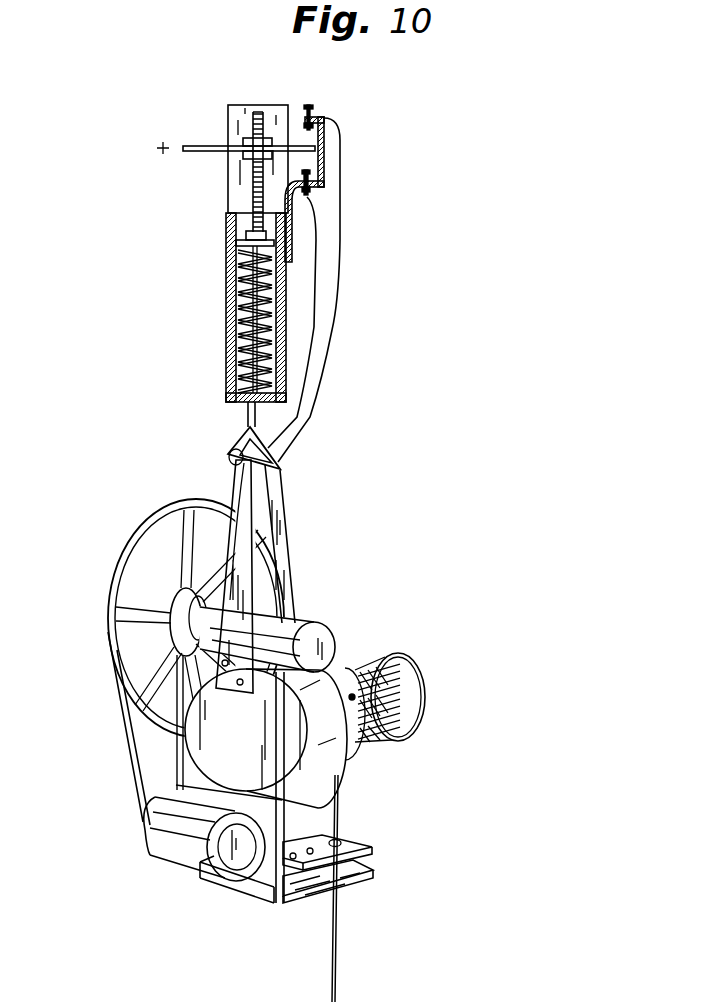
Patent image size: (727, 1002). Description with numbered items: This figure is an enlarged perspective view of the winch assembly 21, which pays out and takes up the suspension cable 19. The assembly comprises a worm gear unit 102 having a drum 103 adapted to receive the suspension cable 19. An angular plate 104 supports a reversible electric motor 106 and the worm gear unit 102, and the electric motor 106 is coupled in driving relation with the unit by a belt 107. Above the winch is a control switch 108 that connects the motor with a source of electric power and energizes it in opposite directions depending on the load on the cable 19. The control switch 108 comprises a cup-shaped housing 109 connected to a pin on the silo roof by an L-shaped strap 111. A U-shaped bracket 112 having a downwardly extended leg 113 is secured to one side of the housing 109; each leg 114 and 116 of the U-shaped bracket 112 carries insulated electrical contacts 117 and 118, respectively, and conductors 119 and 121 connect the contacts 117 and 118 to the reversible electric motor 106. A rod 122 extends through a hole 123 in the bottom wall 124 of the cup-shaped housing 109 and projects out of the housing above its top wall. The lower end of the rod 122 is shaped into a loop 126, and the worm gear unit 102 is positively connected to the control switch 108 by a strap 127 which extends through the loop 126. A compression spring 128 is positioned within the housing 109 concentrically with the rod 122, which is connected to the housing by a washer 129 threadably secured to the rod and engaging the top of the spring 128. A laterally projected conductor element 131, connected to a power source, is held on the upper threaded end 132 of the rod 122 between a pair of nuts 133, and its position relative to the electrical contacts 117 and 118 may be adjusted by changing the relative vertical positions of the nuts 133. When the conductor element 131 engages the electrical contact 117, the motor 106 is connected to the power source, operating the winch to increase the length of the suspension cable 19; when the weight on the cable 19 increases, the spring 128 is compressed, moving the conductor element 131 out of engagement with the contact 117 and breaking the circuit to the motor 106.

The suspension cable 19 is at (340, 945).
The winch assembly 21 is at (74, 665).
The worm gear unit 102 is at (302, 618).
The drum 103 is at (410, 690).
The angular plate 104 is at (246, 760).
The reversible electric motor 106 is at (184, 863).
The belt 107 is at (130, 750).
The control switch 108 is at (160, 272).
The cup-shaped housing 109 is at (228, 358).
The L-shaped strap 111 is at (232, 200).
The U-shaped bracket 112 is at (325, 140).
The downwardly extended leg 113 is at (292, 240).
The leg 114 is at (306, 105).
The leg 116 is at (322, 170).
The insulated electrical contact 117 is at (316, 110).
The insulated electrical contact 118 is at (310, 186).
The conductor 119 is at (331, 327).
The conductor 121 is at (313, 345).
The rod 122 is at (256, 430).
The hole 123 is at (246, 407).
The bottom wall 124 is at (249, 415).
The loop 126 is at (228, 452).
The strap 127 is at (233, 491).
The compression spring 128 is at (240, 321).
The washer 129 is at (240, 243).
The conductor element 131 is at (297, 137).
The upper threaded end 132 is at (252, 178).
The nuts 133 is at (246, 143).